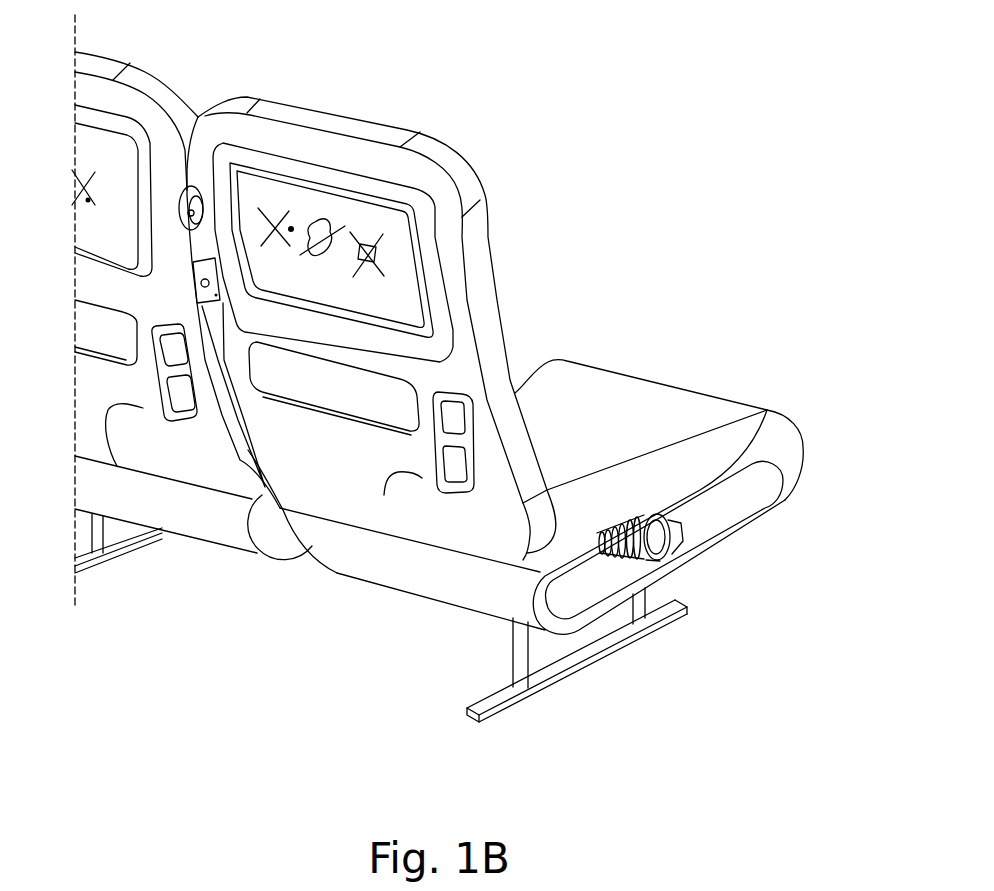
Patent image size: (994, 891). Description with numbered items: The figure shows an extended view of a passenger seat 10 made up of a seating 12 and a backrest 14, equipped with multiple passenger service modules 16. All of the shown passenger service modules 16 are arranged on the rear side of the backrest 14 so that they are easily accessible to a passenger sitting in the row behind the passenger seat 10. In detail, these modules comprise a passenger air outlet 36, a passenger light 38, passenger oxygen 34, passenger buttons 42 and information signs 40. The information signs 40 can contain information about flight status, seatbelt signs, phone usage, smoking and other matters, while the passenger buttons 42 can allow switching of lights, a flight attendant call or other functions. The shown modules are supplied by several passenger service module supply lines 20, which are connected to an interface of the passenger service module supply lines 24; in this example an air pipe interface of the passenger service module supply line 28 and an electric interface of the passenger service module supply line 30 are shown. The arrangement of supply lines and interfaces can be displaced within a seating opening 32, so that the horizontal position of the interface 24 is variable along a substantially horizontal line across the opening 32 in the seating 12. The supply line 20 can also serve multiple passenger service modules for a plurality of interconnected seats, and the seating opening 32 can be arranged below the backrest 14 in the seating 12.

The passenger seat 10 is at (629, 85).
The seating 12 is at (610, 397).
The backrest 14 is at (307, 104).
The passenger service modules 16 is at (293, 576).
The passenger service module supply lines 20 is at (616, 559).
The interface of the passenger service module supply lines 24 is at (677, 557).
The air pipe interface of the passenger service module supply line 28 is at (668, 560).
The electric interface of the passenger service module supply line 30 is at (684, 553).
The seating opening 32 is at (765, 477).
The passenger oxygen 34 is at (375, 398).
The passenger air outlet 36 is at (218, 300).
The passenger light 38 is at (197, 178).
The information signs 40 is at (399, 237).
The passenger buttons 42 is at (456, 469).